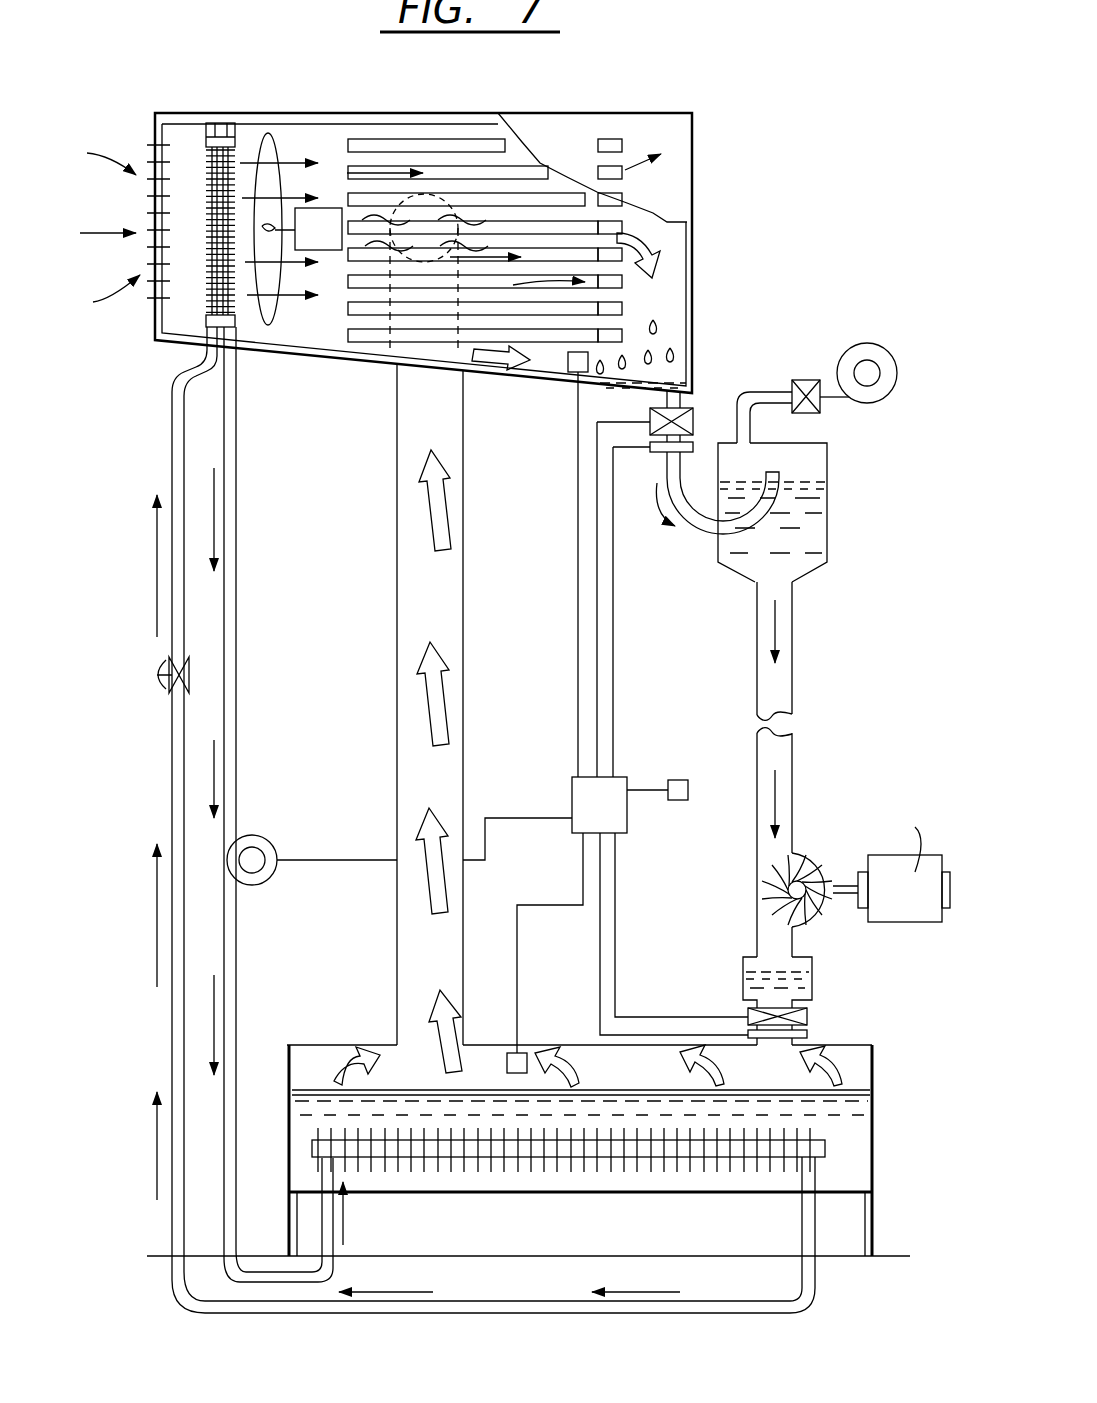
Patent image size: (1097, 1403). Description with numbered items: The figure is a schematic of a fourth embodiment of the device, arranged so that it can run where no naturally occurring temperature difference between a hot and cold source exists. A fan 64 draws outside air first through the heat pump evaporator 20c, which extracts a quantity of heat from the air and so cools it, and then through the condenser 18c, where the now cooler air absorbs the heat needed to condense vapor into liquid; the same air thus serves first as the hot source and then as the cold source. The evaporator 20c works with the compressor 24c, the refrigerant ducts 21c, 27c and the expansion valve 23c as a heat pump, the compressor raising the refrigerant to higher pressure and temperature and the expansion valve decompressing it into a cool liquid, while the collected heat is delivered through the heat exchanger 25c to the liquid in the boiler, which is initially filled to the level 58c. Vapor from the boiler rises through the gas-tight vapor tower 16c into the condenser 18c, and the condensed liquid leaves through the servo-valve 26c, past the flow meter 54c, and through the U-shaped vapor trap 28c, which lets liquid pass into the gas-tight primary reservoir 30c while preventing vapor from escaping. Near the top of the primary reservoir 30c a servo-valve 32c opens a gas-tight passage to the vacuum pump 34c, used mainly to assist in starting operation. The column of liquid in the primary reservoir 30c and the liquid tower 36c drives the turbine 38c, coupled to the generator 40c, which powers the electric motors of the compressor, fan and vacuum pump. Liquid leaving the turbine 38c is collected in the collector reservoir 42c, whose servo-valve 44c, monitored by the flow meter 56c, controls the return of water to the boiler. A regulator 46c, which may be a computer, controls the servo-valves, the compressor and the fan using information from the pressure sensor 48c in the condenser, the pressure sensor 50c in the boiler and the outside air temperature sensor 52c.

The vapor tower 16c is at (460, 608).
The condenser 18c is at (608, 112).
The heat pump evaporator 20c is at (220, 123).
The duct 21c is at (232, 472).
The expansion valve 23c is at (172, 660).
The compressor 24c is at (273, 843).
The heat exchanger 25c is at (615, 1150).
The servo-valve 26c is at (693, 418).
The duct 27c is at (172, 448).
The vapor trap 28c is at (702, 532).
The primary reservoir 30c is at (827, 545).
The servo-valve 32c is at (808, 378).
The vacuum pump 34c is at (875, 343).
The liquid tower 36c is at (792, 677).
The turbine 38c is at (758, 893).
The generator 40c is at (923, 923).
The collector reservoir 42c is at (743, 968).
The servo-valve 44c is at (747, 1012).
The regulator 46c is at (575, 790).
The pressure sensor 48c is at (578, 372).
The pressure sensor 50c is at (525, 1053).
The outside air temperature sensor 52c is at (670, 780).
The flow meter 54c is at (695, 446).
The flow meter 56c is at (748, 1033).
The liquid level 58c is at (655, 1090).
The fan 64 is at (272, 138).